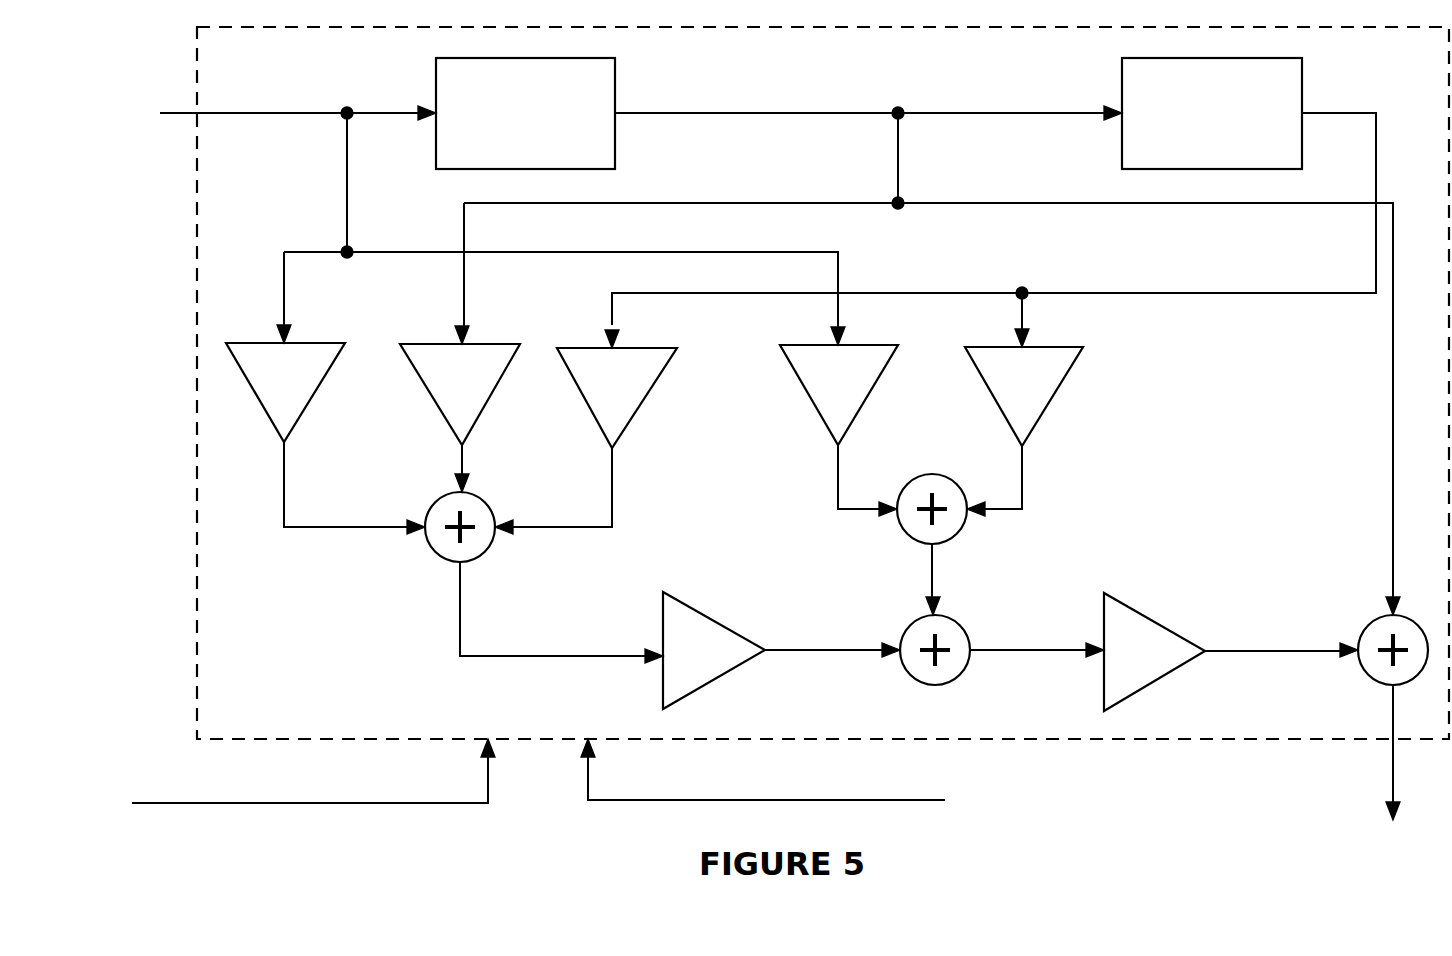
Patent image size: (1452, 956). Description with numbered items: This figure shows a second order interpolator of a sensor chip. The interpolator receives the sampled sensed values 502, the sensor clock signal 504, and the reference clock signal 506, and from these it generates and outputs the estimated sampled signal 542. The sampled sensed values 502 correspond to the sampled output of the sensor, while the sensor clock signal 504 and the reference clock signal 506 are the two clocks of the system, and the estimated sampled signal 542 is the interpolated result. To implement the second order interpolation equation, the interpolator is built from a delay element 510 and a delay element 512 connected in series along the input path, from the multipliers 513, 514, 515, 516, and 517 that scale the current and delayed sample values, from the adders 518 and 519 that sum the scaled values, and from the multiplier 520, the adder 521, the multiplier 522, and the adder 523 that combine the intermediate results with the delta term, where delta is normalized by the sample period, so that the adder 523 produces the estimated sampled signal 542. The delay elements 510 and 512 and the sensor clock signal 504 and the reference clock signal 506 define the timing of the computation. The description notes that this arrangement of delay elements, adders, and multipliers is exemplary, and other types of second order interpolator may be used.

The sampled sensed values 502 is at (260, 113).
The sensor clock signal 504 is at (313, 771).
The reference clock signal 506 is at (840, 782).
The delay element 510 is at (525, 113).
The delay element 512 is at (1212, 113).
The multiplier 513 is at (250, 402).
The multiplier 514 is at (456, 405).
The multiplier 515 is at (623, 417).
The multiplier 516 is at (843, 402).
The multiplier 517 is at (1052, 408).
The adder 518 is at (445, 553).
The adder 519 is at (922, 532).
The multiplier 520 is at (675, 673).
The adder 521 is at (920, 670).
The multiplier 522 is at (1117, 680).
The adder 523 is at (1373, 638).
The estimated sampled signal 542 is at (1302, 752).